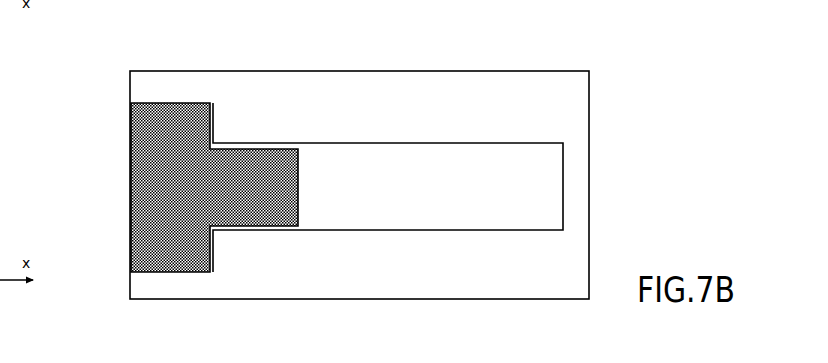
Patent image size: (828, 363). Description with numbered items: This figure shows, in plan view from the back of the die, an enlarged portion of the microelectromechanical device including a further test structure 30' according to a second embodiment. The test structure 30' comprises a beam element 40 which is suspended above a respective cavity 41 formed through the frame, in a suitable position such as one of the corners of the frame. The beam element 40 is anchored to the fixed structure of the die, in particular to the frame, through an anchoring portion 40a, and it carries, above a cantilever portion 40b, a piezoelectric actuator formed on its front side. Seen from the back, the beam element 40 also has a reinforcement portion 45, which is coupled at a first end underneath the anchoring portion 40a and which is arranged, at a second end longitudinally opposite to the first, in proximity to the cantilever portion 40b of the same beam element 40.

The further test structure 30' is at (397, 185).
The beam element 40 is at (347, 181).
The anchoring portion 40a is at (250, 229).
The cantilever portion 40b is at (434, 214).
The cavity 41 is at (328, 293).
The reinforcement portion 45 is at (148, 168).